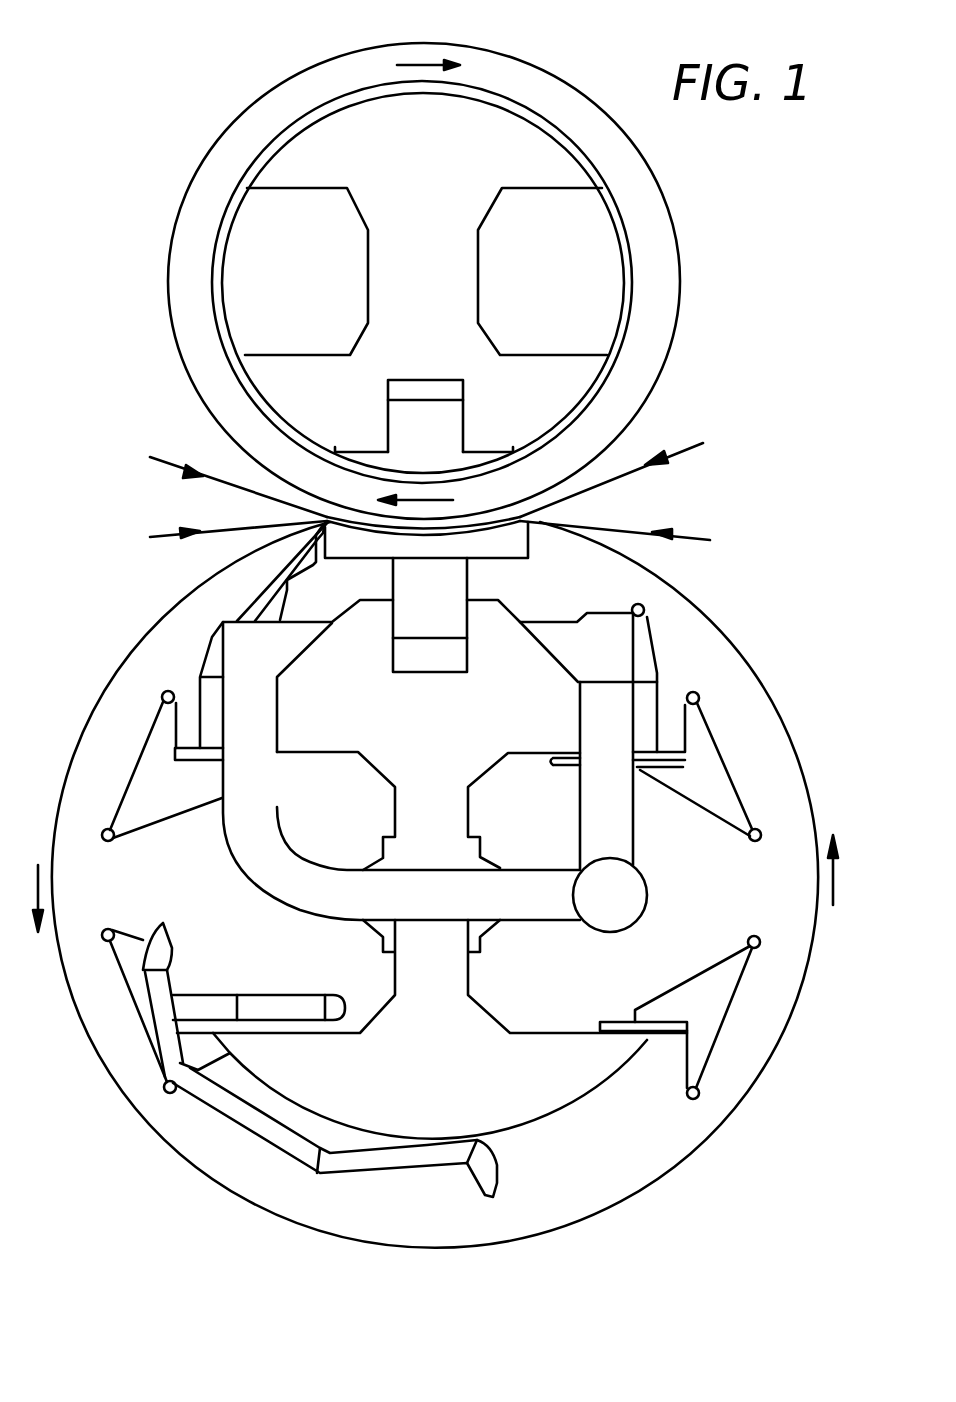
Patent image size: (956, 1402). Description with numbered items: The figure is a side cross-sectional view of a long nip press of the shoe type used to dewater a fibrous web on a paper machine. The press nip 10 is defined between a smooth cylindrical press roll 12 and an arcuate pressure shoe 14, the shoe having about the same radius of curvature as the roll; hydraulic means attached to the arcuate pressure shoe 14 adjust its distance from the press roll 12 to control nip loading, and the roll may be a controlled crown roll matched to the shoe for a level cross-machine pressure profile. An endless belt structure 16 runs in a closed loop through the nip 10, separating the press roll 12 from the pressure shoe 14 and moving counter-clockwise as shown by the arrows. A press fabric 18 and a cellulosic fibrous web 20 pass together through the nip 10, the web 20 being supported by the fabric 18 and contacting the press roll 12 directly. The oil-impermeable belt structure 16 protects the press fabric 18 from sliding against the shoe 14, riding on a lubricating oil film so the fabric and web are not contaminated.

The press nip 10 is at (650, 496).
The smooth cylindrical press roll 12 is at (653, 302).
The arcuate pressure shoe 14 is at (512, 547).
The endless belt structure 16 is at (812, 812).
The press fabric 18 is at (213, 530).
The cellulosic fibrous web 20 is at (213, 458).